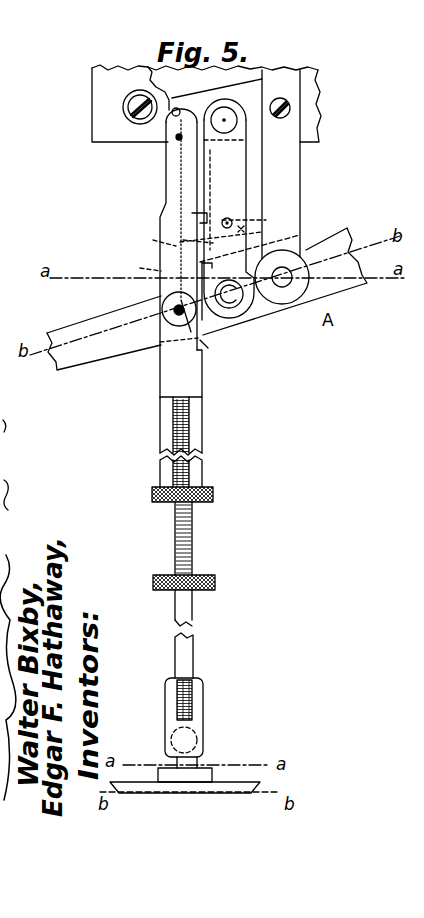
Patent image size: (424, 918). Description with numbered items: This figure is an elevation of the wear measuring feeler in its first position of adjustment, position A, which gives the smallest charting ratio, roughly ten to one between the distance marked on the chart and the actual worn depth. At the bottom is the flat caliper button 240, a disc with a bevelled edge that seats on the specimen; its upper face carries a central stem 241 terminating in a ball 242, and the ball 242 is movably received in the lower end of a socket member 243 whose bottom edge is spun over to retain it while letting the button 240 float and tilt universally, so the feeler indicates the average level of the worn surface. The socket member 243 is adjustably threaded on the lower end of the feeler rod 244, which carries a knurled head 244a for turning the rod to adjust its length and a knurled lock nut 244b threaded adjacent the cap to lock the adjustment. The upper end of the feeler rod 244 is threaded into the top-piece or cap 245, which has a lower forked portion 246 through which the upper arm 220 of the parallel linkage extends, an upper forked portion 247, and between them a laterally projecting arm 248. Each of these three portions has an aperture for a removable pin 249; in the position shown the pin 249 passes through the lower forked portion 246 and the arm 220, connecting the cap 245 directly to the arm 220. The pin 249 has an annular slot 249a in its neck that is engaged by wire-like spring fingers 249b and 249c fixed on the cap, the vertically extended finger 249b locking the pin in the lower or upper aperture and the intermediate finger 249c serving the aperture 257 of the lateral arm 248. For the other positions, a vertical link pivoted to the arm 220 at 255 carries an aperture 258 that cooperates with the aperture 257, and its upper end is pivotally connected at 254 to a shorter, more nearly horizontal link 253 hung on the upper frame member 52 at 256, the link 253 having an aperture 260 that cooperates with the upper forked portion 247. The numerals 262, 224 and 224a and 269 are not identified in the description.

The aperture 260 is at (147, 69).
The upper frame member 52 is at (108, 83).
The pivot 256 is at (123, 107).
The link 253 is at (173, 98).
The pivotal connection 254 is at (224, 113).
The arm 262 is at (239, 166).
The bracket portion 224a is at (292, 177).
The bar 224 is at (304, 252).
The pin-receiving aperture 257 is at (240, 227).
The aperture 258 is at (227, 218).
The pin 269 is at (177, 139).
The upper forked portion 247 is at (167, 178).
The laterally projecting arm 248 is at (166, 213).
The spring finger 249c is at (160, 237).
The spring finger 249b is at (156, 285).
The removable pin 249 is at (157, 341).
The annular slot 249a is at (228, 349).
The lower forked portion 246 is at (162, 283).
The upper arm 220 is at (73, 330).
The pivot 255 is at (246, 312).
The cap 245 is at (178, 380).
The knurled lock nut 244b is at (214, 494).
The feeler rod 244 is at (194, 655).
The knurled head 244a is at (216, 582).
The socket member 243 is at (198, 702).
The ball 242 is at (200, 737).
The central stem 241 is at (199, 766).
The caliper button 240 is at (254, 789).